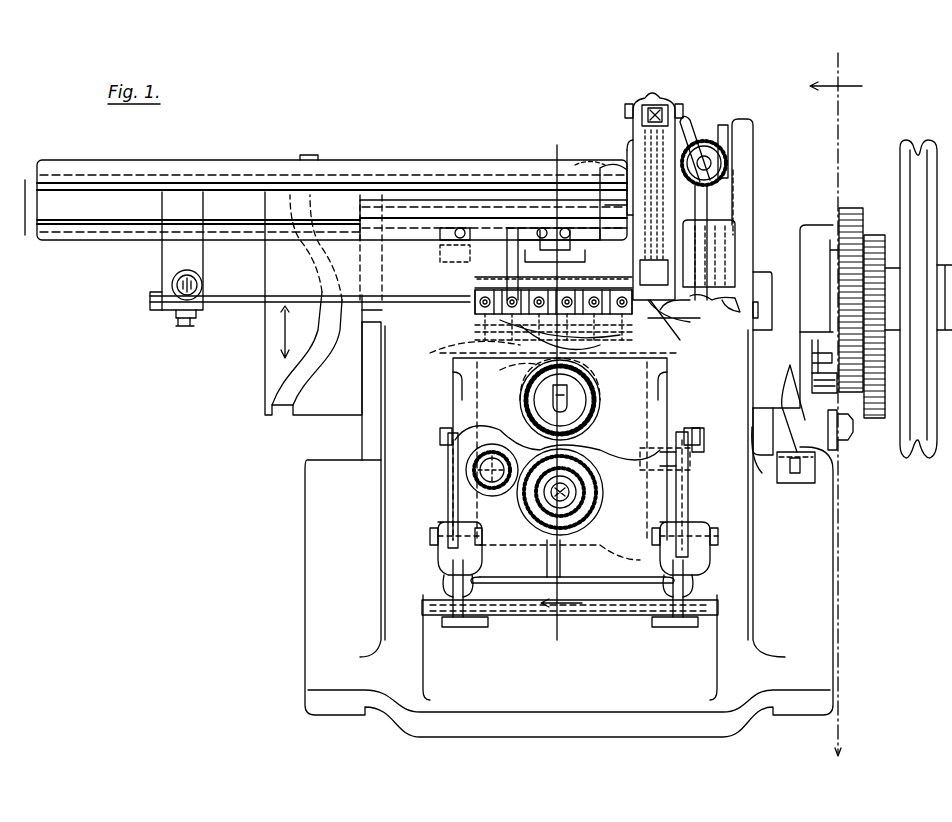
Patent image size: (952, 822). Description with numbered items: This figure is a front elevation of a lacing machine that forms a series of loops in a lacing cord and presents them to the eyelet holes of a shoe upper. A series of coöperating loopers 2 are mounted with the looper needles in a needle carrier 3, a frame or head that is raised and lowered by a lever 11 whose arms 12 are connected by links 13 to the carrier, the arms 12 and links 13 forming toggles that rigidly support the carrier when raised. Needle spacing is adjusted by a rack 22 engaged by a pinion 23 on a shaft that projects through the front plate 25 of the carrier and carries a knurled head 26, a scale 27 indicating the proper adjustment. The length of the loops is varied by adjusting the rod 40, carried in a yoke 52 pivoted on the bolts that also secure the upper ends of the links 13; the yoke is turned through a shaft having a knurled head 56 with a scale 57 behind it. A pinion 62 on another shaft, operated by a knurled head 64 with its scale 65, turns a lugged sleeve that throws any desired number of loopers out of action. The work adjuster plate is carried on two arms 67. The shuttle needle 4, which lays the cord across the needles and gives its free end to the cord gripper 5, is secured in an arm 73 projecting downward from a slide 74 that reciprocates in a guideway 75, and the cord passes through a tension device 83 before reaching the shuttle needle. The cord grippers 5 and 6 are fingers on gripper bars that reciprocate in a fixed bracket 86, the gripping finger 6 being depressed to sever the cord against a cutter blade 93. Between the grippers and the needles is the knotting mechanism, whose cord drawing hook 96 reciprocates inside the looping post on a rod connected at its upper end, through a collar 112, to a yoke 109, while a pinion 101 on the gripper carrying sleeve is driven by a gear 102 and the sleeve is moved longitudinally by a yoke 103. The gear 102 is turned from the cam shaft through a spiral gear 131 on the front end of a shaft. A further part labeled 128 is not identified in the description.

The loopers 2 is at (548, 298).
The needle carrier 3 is at (455, 381).
The shuttle needle 4 is at (250, 304).
The cord gripper 5 is at (700, 318).
The cord gripper 6 is at (740, 290).
The lever 11 is at (592, 576).
The arms 12 is at (688, 574).
The links 13 is at (448, 506).
The rack 22 is at (459, 346).
The pinion 23 is at (513, 368).
The front plate 25 is at (569, 396).
The knurled head 26 is at (580, 400).
The scale 27 is at (590, 390).
The rod 40 is at (674, 461).
The yoke 52 is at (688, 450).
The knurled head 56 is at (586, 500).
The scale 57 is at (585, 462).
The pinion 62 is at (323, 303).
The knurled head 64 is at (490, 480).
The scale 65 is at (486, 452).
The arms 67 is at (512, 226).
The arm 73 is at (166, 257).
The slide 74 is at (326, 210).
The guideway 75 is at (408, 175).
The tension device 83 is at (200, 282).
The fixed bracket 86 is at (738, 236).
The cutter blade 93 is at (740, 312).
The hook 96 is at (670, 334).
The pinion 101 is at (612, 188).
The gear 102 is at (640, 212).
The yoke 103 is at (622, 140).
The yoke 109 is at (626, 108).
The collar 112 is at (669, 111).
The arm 128 is at (718, 204).
The spiral gear 131 is at (726, 176).